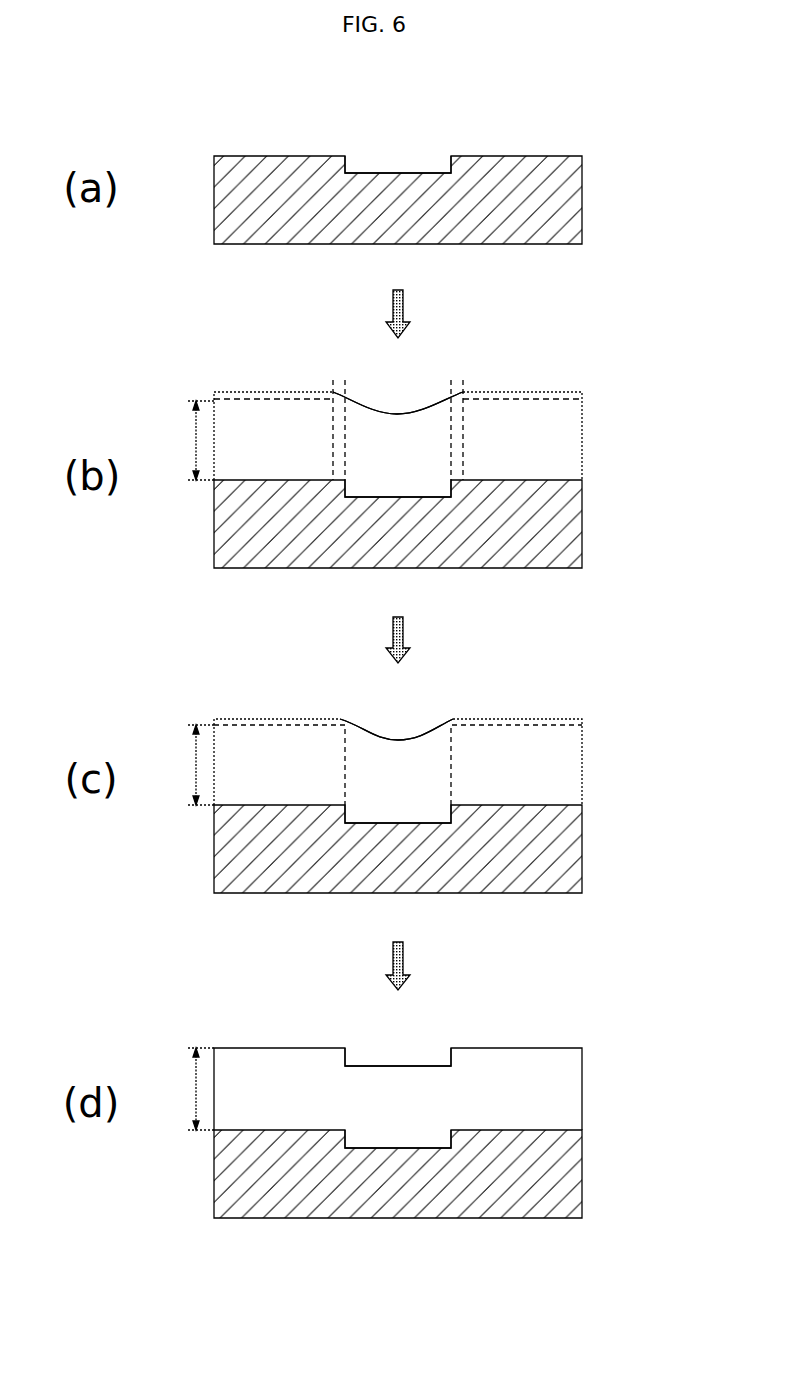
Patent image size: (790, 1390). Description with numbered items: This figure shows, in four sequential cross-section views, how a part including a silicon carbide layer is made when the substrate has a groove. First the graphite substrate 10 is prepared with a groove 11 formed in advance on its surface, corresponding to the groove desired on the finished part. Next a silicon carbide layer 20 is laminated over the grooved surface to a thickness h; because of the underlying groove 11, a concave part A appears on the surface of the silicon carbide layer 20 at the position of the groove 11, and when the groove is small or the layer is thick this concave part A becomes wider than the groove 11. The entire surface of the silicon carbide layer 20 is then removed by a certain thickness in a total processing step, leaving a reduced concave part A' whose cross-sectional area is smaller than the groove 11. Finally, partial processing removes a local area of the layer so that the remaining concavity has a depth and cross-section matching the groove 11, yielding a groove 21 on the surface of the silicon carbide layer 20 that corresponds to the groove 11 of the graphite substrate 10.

The graphite substrate 10 is at (577, 203).
The groove 11 is at (430, 147).
The silicon carbide layer 20 is at (573, 440).
The groove 21 is at (418, 1065).
The concave part A is at (431, 362).
The depressed region after leveling A' is at (432, 696).
The coating layer thickness h is at (197, 765).